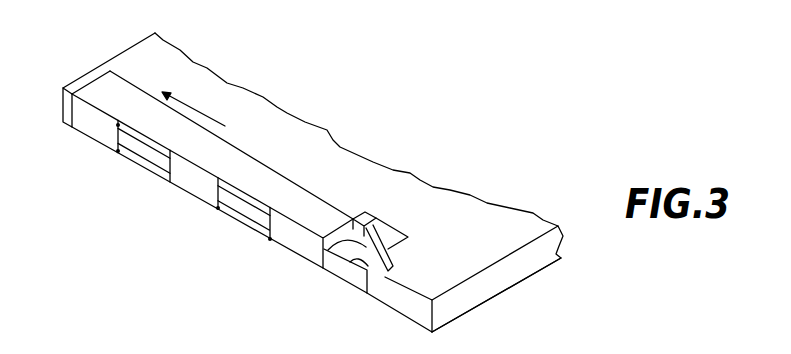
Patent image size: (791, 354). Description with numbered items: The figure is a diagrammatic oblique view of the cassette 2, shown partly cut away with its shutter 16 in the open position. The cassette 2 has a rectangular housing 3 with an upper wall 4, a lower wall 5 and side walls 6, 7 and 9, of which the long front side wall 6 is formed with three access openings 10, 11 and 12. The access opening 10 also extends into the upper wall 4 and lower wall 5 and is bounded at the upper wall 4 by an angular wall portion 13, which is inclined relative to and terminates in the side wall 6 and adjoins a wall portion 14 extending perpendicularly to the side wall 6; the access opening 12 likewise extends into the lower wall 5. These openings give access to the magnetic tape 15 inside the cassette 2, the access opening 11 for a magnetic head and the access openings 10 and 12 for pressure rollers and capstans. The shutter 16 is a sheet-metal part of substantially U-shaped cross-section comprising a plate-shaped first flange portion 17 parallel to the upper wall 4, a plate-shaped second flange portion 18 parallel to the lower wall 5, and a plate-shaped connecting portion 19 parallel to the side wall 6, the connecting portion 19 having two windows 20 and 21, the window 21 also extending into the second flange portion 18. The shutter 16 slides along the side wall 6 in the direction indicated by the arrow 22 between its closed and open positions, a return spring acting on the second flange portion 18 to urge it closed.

The cassette 2 is at (322, 175).
The housing 3 is at (489, 286).
The upper wall 4 is at (328, 142).
The lower wall 5 is at (477, 310).
The side wall 6 is at (417, 313).
The side wall 7 is at (528, 272).
The side wall 9 is at (108, 57).
The access opening 10 is at (367, 298).
The access opening 11 is at (268, 240).
The access opening 12 is at (168, 182).
The angular wall portion 13 is at (388, 257).
The wall portion 14 is at (365, 222).
The magnetic tape 15 is at (153, 160).
The shutter 16 is at (105, 151).
The first flange portion 17 is at (290, 190).
The second flange portion 18 is at (328, 270).
The connecting portion 19 is at (92, 127).
The window 20 is at (244, 187).
The window 21 is at (123, 127).
The arrow 22 is at (200, 108).